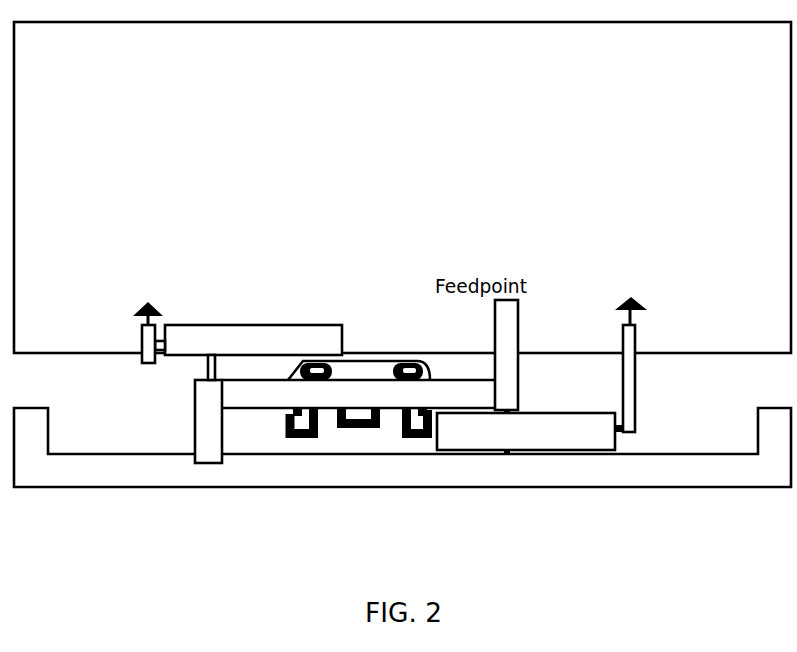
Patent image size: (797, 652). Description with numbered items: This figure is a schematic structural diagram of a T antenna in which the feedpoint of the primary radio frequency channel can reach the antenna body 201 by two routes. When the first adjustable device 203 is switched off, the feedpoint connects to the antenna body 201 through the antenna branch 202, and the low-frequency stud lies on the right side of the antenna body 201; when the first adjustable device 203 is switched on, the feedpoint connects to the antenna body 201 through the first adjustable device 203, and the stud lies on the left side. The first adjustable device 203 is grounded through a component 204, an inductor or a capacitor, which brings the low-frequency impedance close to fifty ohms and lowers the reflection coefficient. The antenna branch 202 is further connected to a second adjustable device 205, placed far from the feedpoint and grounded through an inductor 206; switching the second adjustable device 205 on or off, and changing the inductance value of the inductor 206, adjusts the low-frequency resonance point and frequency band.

The antenna body 201 is at (377, 475).
The antenna branch 202 is at (195, 420).
The first adjustable device 203 is at (542, 413).
The component 204 is at (637, 392).
The second adjustable device 205 is at (257, 324).
The inductor 206 is at (141, 346).